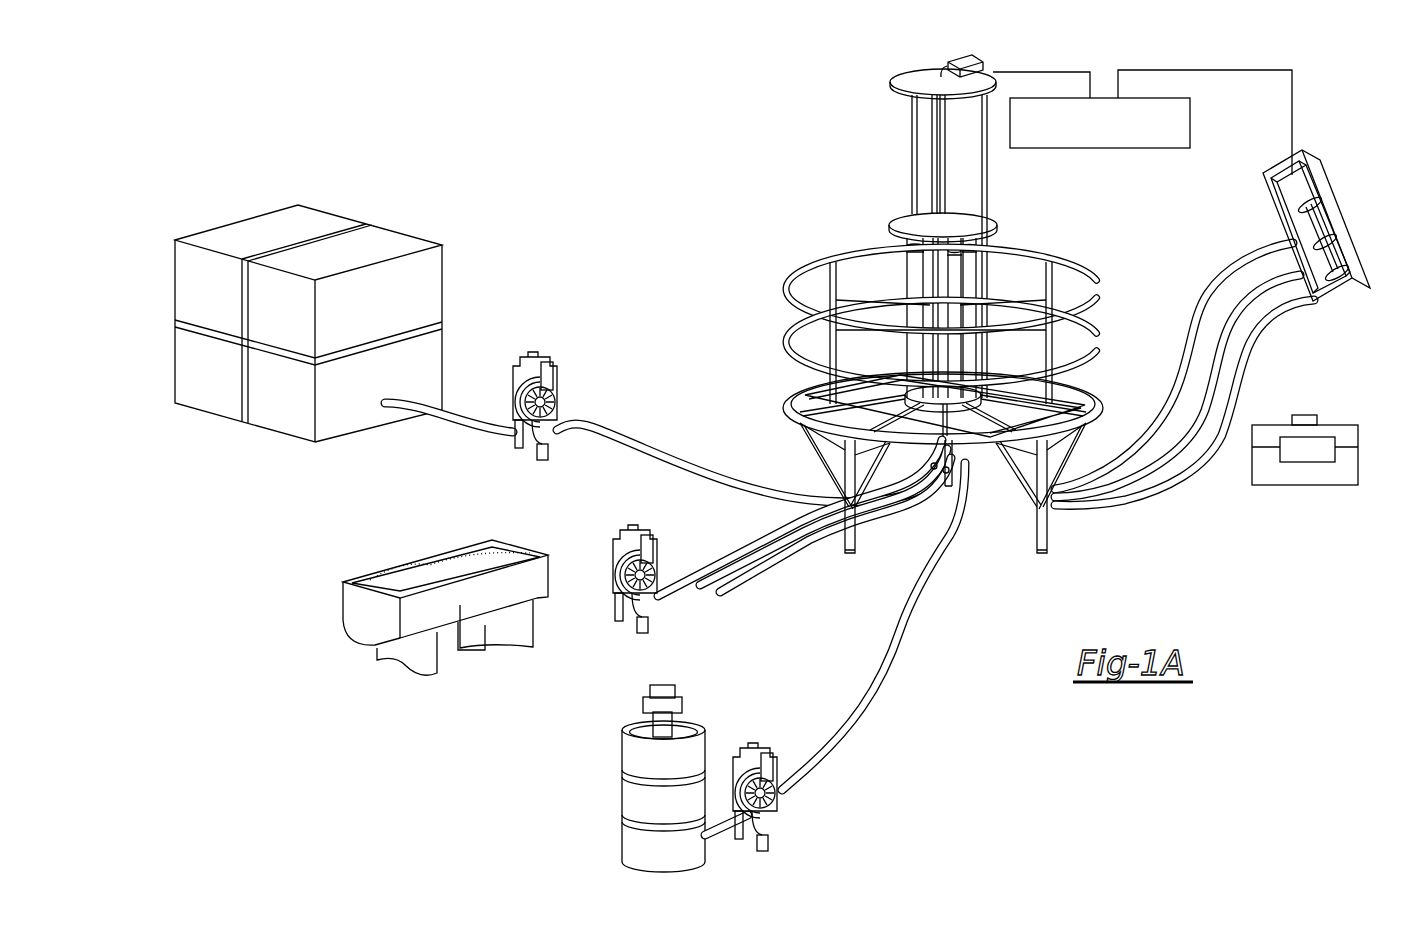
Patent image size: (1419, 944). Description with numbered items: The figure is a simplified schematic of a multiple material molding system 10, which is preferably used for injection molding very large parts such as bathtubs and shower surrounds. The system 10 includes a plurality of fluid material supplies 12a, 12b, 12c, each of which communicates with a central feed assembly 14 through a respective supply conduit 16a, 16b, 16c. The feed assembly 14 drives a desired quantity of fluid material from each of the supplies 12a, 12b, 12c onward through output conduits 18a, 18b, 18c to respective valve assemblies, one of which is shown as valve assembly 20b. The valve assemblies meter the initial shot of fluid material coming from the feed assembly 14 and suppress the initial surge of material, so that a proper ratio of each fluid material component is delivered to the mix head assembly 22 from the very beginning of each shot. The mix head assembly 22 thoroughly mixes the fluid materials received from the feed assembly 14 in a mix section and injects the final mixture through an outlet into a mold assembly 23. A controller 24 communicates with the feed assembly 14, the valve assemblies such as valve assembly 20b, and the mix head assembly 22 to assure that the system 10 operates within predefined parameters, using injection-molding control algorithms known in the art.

The multiple material molding system 10 is at (900, 304).
The fluid material supply 12a is at (375, 238).
The fluid material supply 12b is at (350, 610).
The fluid material supply 12c is at (625, 752).
The feed assembly 14 is at (856, 227).
The supply conduit 16a is at (618, 438).
The supply conduit 16b is at (710, 563).
The supply conduit 16c is at (862, 702).
The output conduit 18a is at (1232, 268).
The output conduit 18b is at (1225, 342).
The output conduit 18c is at (1273, 313).
The valve assembly 20b is at (1328, 235).
The mix head assembly 22 is at (1291, 192).
The mold assembly 23 is at (1263, 486).
The controller 24 is at (1055, 148).